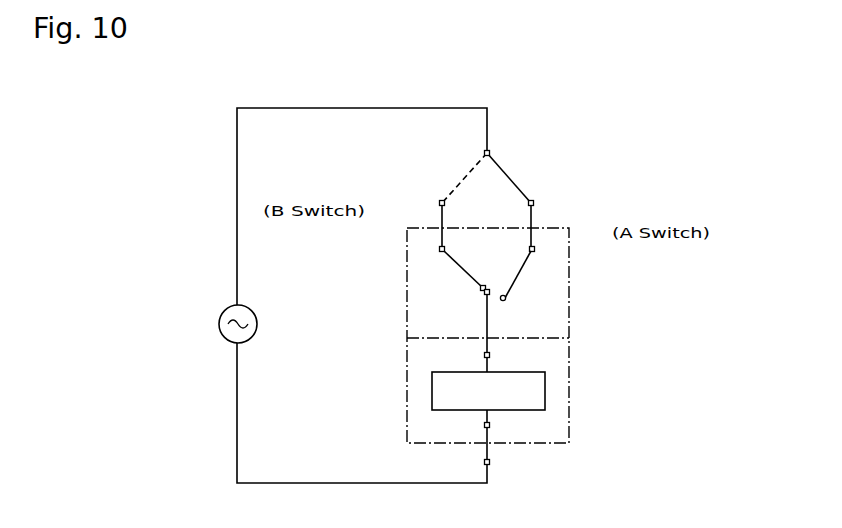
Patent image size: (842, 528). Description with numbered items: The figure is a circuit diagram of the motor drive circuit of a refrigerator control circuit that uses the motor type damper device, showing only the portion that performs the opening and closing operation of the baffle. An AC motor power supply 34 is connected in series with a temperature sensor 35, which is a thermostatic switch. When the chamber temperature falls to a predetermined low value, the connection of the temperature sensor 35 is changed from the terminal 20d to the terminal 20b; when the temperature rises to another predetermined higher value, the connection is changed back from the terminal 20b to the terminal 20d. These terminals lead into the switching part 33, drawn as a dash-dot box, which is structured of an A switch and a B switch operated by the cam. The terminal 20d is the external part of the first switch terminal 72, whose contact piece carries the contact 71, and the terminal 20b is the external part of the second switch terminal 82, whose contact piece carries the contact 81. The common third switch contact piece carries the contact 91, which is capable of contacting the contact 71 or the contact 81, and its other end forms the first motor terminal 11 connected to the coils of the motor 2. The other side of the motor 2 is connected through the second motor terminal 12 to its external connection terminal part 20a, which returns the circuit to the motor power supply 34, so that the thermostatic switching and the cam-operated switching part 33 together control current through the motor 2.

The motor power supply 34 is at (218, 326).
The temperature sensor 35 is at (515, 160).
The external connection terminal part 20b is at (440, 202).
The external connection terminal part 20d is at (535, 201).
The switching part 33 is at (569, 264).
The second switch terminal 82 is at (440, 249).
The contact 81 is at (480, 288).
The contact 91 is at (485, 292).
The first switch terminal 72 is at (536, 248).
The contact 71 is at (507, 300).
The first motor terminal 11 is at (490, 355).
The motor 2 is at (545, 391).
The second motor terminal 12 is at (490, 425).
The external connection terminal part 20a is at (490, 463).